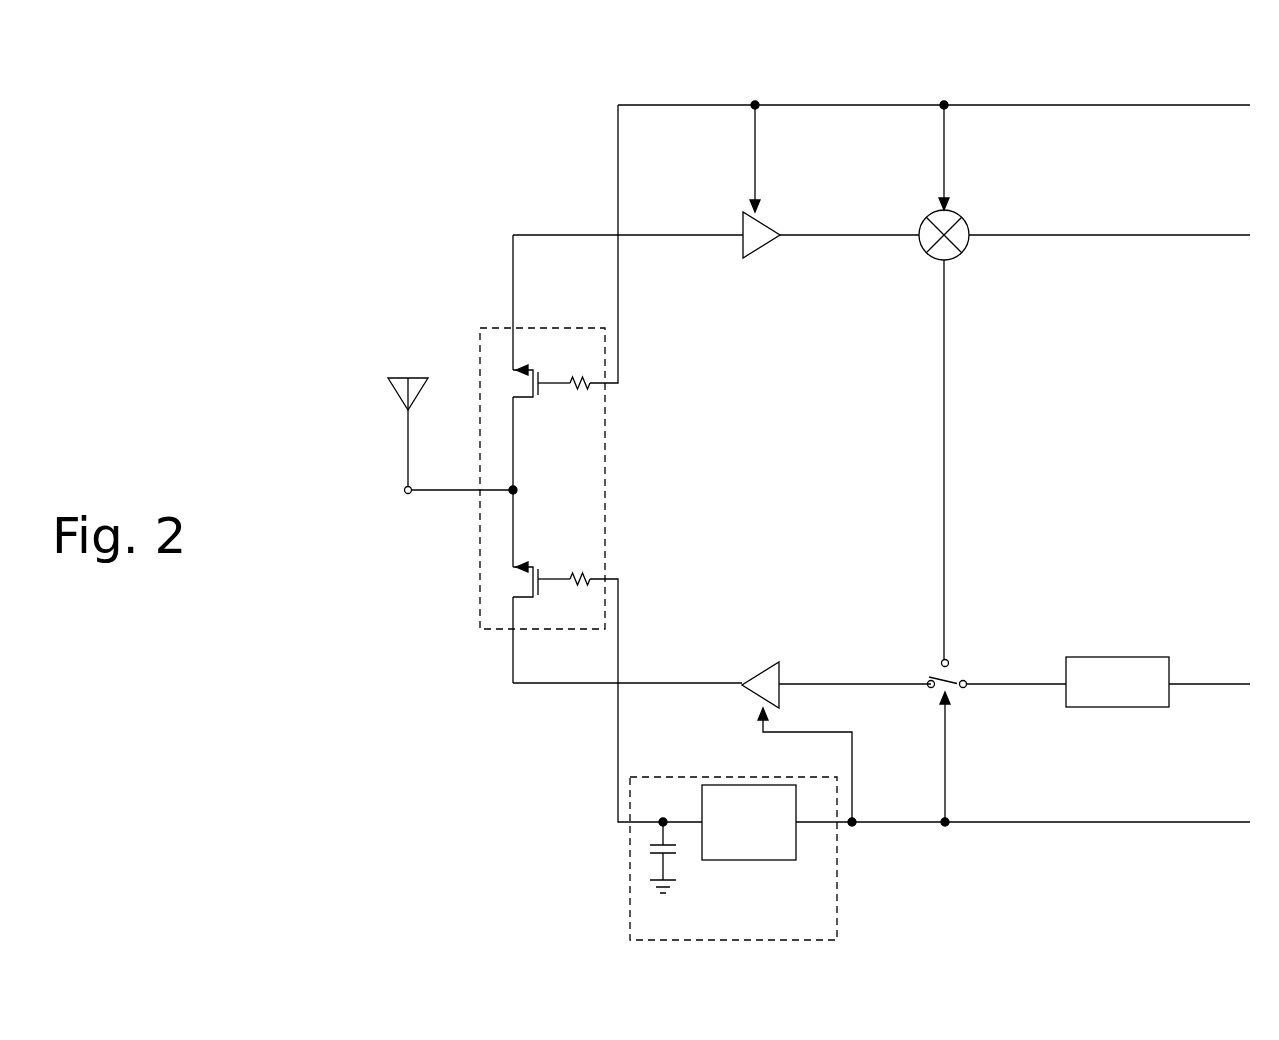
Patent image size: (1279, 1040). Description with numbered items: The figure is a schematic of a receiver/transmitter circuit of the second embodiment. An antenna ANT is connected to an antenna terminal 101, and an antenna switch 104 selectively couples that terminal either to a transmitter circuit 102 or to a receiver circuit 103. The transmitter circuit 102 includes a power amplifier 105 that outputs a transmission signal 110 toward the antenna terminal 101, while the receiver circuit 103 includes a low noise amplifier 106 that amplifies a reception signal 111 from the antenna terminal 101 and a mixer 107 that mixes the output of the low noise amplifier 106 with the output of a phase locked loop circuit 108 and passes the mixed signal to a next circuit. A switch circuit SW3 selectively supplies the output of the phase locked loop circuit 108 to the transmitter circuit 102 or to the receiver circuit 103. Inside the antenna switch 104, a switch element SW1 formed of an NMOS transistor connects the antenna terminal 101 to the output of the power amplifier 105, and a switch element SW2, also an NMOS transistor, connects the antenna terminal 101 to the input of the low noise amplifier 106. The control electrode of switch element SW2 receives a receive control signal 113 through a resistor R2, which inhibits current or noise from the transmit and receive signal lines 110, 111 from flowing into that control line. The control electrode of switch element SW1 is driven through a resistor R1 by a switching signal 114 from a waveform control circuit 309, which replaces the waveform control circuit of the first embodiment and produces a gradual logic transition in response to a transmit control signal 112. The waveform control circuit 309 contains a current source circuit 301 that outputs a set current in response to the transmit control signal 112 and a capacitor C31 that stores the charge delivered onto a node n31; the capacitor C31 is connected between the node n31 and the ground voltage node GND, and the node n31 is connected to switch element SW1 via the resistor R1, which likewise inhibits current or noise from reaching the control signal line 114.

The antenna terminal 101 is at (444, 438).
The transmitter circuit 102 is at (772, 627).
The receiver circuit 103 is at (797, 324).
The antenna switch 104 is at (537, 515).
The power amplifier 105 is at (785, 668).
The low noise amplifier 106 is at (778, 222).
The mixer 107 is at (967, 213).
The phase locked loop circuit 108 is at (1128, 655).
The transmission signal 110 is at (518, 687).
The reception signal 111 is at (545, 233).
The transmit control signal 112 is at (1098, 820).
The receive control signal 113 is at (1082, 106).
The switching signal 114 is at (617, 752).
The current source circuit 301 is at (775, 862).
The waveform control circuit 309 is at (742, 858).
The antenna ANT is at (405, 378).
The switch element SW1 is at (546, 565).
The switch element SW2 is at (544, 399).
The switch circuit SW3 is at (958, 665).
The resistor R1 is at (603, 575).
The resistor R2 is at (603, 388).
The capacitor C31 is at (645, 855).
The node n31 is at (668, 808).
The ground voltage node GND is at (667, 900).